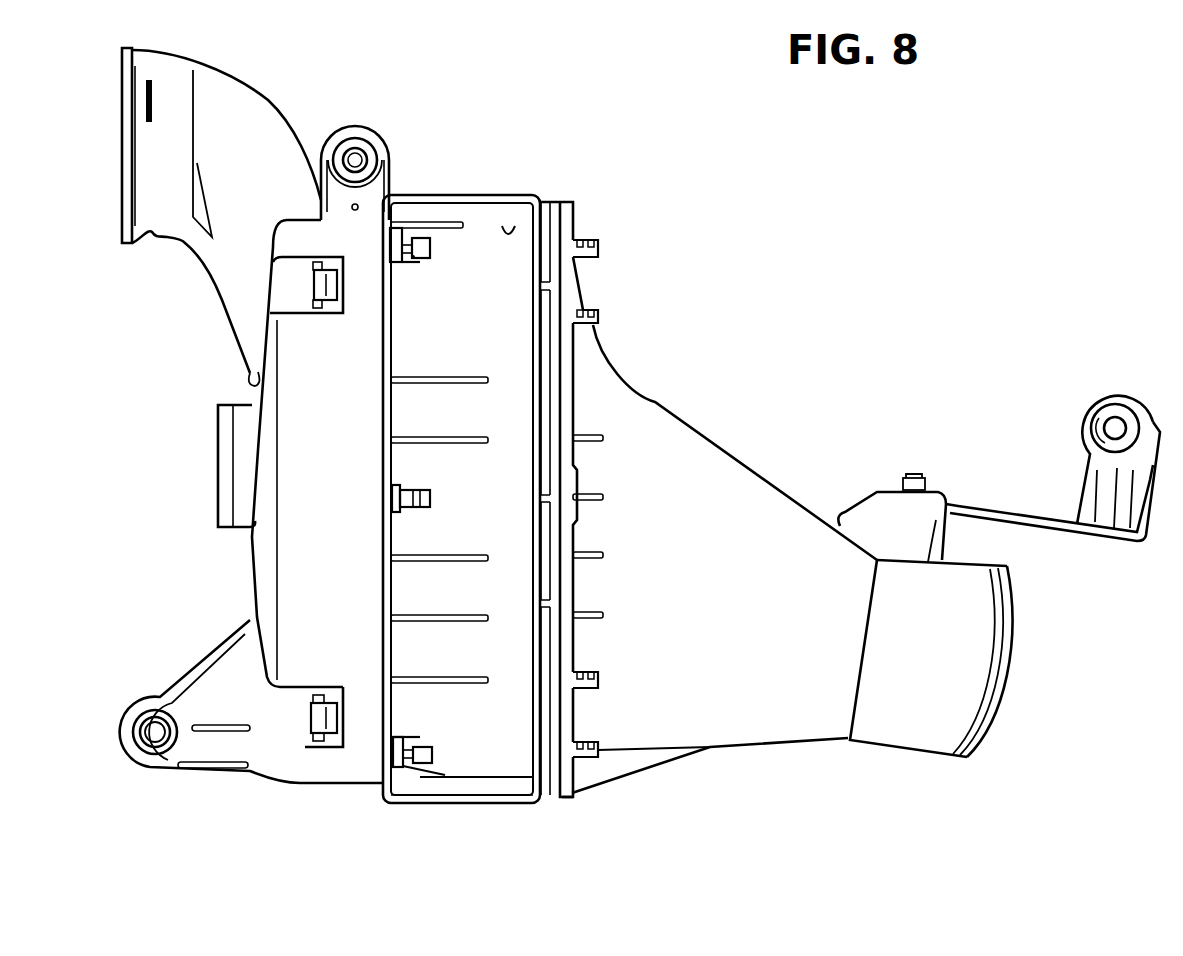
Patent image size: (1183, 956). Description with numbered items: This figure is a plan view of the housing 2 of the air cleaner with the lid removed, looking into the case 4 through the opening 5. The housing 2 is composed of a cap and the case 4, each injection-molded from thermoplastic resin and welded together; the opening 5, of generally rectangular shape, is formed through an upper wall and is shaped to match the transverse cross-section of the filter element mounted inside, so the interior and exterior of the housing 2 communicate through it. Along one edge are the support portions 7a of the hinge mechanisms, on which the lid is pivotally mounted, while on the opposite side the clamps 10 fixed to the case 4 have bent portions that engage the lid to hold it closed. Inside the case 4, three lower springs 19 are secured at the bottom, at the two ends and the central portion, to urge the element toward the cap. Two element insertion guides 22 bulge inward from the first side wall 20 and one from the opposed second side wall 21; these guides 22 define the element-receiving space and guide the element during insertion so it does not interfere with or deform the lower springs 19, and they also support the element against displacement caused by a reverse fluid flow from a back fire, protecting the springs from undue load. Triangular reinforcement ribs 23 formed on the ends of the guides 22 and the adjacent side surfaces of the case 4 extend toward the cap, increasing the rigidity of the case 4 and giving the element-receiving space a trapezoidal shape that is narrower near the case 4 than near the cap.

The housing 2 is at (655, 402).
The case 4 is at (337, 788).
The opening 5 is at (500, 313).
The support portion 7a is at (593, 240).
The clamps 10 is at (313, 287).
The lower springs 19 is at (427, 242).
The first side wall 20 is at (507, 777).
The second side wall 21 is at (510, 232).
The element insertion guides 22 is at (398, 240).
The reinforcement ribs 23 is at (444, 777).